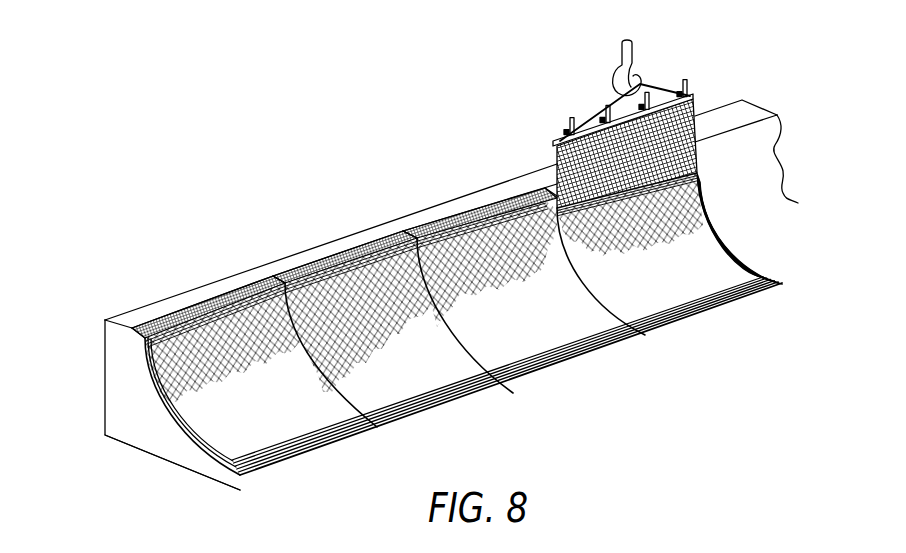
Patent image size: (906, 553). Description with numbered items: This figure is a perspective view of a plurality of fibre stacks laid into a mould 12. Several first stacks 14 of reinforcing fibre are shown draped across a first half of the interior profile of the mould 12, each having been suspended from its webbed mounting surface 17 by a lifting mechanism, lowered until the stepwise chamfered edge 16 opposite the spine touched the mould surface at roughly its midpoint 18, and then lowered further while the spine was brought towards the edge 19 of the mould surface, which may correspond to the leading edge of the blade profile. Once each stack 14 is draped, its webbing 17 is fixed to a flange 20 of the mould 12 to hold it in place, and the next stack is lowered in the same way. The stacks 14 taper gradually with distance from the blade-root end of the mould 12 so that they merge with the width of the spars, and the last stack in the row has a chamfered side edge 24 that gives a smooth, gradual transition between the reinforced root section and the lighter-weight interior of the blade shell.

The mould 12 is at (108, 395).
The first stack 14 is at (248, 332).
The stepwise chamfered edge 16 is at (297, 447).
The mounting surface 17 is at (185, 318).
The midpoint 18 is at (227, 468).
The edge 19 is at (145, 338).
The flange 20 is at (130, 318).
The chamfered side edge 24 is at (743, 260).